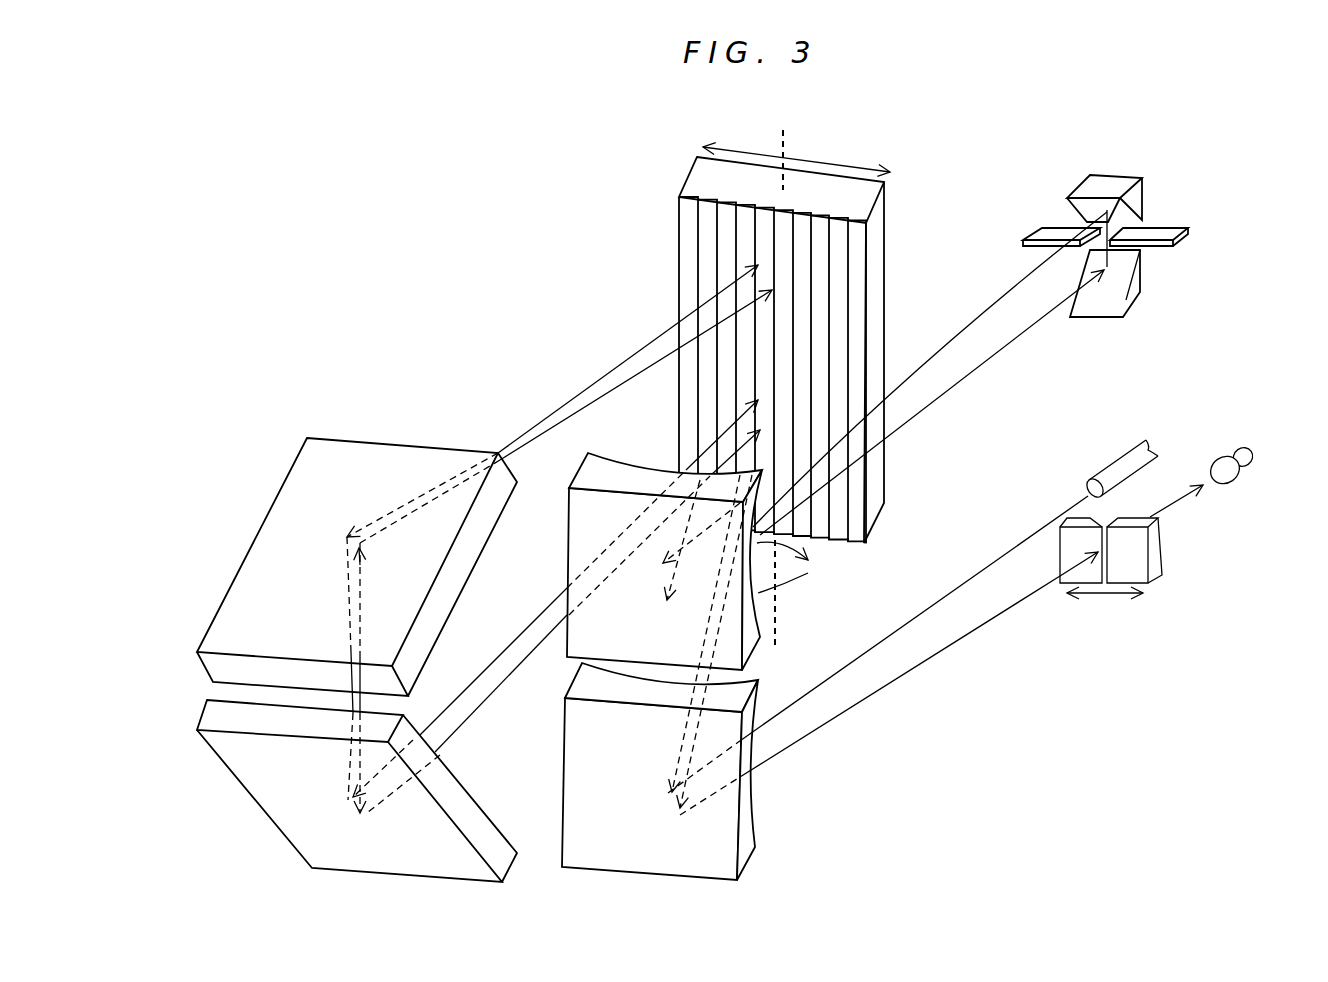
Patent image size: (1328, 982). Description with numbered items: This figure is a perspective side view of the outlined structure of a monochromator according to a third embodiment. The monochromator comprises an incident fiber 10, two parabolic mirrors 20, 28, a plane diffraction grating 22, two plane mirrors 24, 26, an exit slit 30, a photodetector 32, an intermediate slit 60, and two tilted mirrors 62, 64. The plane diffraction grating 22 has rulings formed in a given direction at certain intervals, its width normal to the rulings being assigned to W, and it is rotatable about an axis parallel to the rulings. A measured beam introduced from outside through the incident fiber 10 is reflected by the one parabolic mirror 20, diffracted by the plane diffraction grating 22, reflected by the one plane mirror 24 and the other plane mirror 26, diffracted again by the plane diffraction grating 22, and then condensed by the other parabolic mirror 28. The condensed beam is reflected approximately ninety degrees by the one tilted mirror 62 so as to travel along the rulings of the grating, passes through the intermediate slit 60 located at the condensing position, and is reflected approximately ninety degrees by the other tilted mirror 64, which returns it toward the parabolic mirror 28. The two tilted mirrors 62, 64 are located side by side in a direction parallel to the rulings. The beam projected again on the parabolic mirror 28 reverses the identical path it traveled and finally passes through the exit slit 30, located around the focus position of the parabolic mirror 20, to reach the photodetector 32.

The incident fiber 10 is at (1110, 456).
The parabolic mirror 20 is at (743, 822).
The plane diffraction grating 22 is at (880, 232).
The plane mirror 24 is at (440, 778).
The plane mirror 26 is at (425, 457).
The parabolic mirror 28 is at (580, 528).
The exit slit 30 is at (1158, 557).
The photodetector 32 is at (1253, 467).
The intermediate slit 60 is at (1170, 228).
The tilted mirror 62 is at (1123, 290).
The tilted mirror 64 is at (1118, 178).